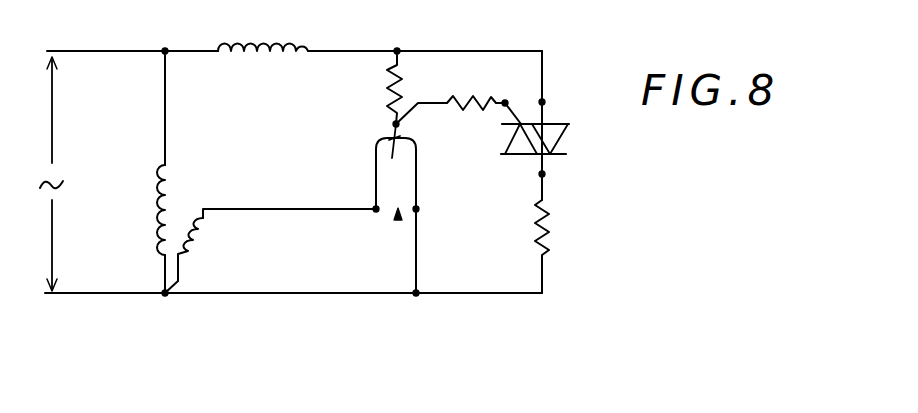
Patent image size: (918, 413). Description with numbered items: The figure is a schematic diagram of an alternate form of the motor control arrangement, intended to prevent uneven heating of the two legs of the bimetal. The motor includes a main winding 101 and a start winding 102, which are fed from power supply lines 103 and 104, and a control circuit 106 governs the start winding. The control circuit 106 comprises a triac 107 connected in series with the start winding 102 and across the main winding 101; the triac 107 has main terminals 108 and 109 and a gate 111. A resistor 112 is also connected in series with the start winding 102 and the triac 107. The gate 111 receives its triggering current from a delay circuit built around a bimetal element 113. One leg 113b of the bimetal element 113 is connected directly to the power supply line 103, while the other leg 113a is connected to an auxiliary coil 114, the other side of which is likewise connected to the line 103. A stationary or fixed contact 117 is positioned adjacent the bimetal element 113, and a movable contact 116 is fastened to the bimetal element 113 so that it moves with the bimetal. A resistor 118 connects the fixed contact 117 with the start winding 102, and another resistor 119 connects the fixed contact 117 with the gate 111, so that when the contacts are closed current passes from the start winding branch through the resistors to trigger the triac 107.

The main winding 101 is at (152, 198).
The start winding 102 is at (250, 42).
The power supply line 103 is at (69, 292).
The power supply line 104 is at (88, 52).
The control circuit 106 is at (386, 210).
The triac 107 is at (568, 144).
The main terminal 108 is at (544, 103).
The main terminal 109 is at (540, 176).
The gate 111 is at (506, 103).
The resistor 112 is at (549, 235).
The bimetal element 113 is at (398, 212).
The leg 113a is at (376, 178).
The leg 113b is at (447, 229).
The auxiliary coil 114 is at (190, 246).
The movable contact 116 is at (395, 150).
The fixed contact 117 is at (399, 127).
The resistor 118 is at (388, 78).
The resistor 119 is at (456, 100).